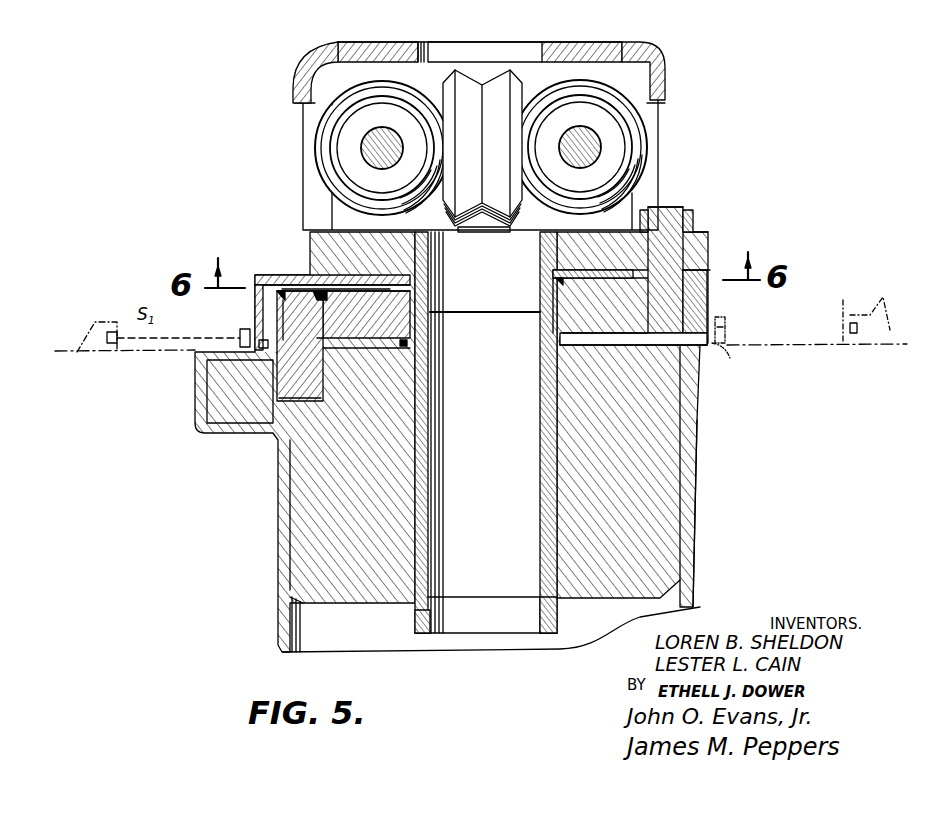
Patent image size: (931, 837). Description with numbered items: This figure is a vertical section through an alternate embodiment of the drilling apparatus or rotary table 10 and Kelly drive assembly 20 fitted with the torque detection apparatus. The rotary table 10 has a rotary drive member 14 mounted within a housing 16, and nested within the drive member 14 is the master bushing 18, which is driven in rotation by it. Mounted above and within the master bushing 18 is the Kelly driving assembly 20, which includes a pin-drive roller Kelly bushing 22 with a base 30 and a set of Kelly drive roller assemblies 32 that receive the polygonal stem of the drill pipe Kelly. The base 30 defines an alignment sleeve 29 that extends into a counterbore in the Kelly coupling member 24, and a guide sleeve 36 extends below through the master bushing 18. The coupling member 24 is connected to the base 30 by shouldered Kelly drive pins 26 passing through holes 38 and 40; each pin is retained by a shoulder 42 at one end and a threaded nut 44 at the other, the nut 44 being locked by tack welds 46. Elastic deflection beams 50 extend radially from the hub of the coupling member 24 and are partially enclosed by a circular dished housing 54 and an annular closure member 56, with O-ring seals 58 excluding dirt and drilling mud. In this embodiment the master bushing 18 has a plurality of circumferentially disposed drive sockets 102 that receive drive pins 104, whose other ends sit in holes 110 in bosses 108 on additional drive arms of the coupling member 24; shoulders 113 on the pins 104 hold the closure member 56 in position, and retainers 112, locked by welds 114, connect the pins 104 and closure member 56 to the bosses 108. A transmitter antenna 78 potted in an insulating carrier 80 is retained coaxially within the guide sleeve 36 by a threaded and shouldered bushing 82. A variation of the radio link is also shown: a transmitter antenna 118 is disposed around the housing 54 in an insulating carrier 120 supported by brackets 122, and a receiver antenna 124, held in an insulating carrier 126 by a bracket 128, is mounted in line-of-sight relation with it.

The rotary table 10 is at (697, 446).
The rotary drive member 14 is at (693, 556).
The housing 16 is at (573, 44).
The master bushing 18 is at (655, 506).
The Kelly driving assembly 20 is at (288, 186).
The Kelly bushing 22 is at (376, 44).
The Kelly coupling member 24 is at (253, 311).
The shouldered Kelly drive pins 26 is at (665, 207).
The alignment sleeve 29 is at (545, 291).
The base 30 is at (705, 229).
The Kelly drive roller assemblies 32 is at (498, 70).
The guide sleeve 36 is at (425, 550).
The hole 38 is at (652, 292).
The hole 40 is at (668, 246).
The shoulders 42 is at (598, 333).
The threaded nut 44 is at (690, 222).
The tack welds 46 is at (680, 212).
The deflection beams 50 is at (596, 326).
The dished housing 54 is at (708, 298).
The annular closure member 56 is at (633, 346).
The O-ring seals 58 is at (558, 274).
The transmitter antenna 78 is at (557, 616).
The insulating carrier 80 is at (421, 630).
The threaded and shouldered bushing 82 is at (545, 625).
The drive sockets 102 is at (320, 386).
The drive pins 104 is at (298, 297).
The bosses 108 is at (277, 335).
The holes 110 is at (315, 312).
The retainers 112 is at (280, 296).
The shoulders 113 is at (327, 347).
The welds 114 is at (280, 290).
The transmitter antenna 118 is at (725, 325).
The insulating carrier 120 is at (725, 335).
The brackets 122 is at (720, 350).
The receiver antenna 124 is at (848, 330).
The insulating carrier 126 is at (845, 302).
The bracket 128 is at (883, 298).